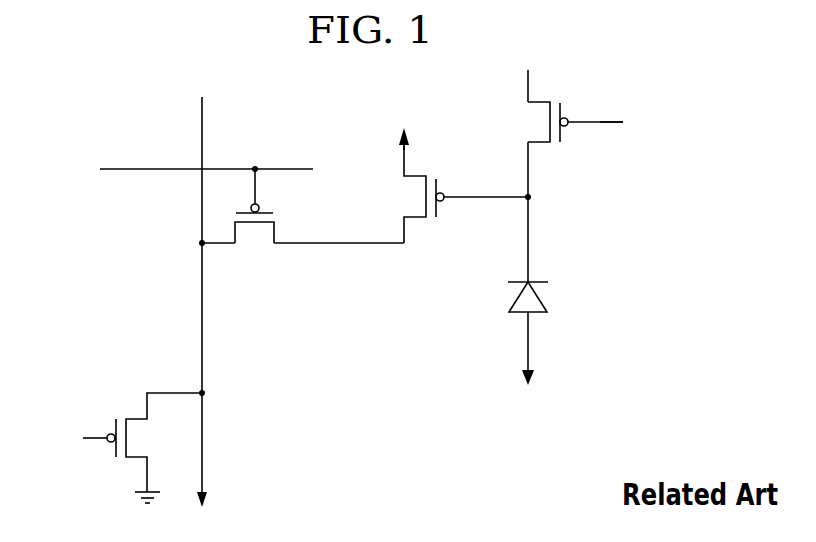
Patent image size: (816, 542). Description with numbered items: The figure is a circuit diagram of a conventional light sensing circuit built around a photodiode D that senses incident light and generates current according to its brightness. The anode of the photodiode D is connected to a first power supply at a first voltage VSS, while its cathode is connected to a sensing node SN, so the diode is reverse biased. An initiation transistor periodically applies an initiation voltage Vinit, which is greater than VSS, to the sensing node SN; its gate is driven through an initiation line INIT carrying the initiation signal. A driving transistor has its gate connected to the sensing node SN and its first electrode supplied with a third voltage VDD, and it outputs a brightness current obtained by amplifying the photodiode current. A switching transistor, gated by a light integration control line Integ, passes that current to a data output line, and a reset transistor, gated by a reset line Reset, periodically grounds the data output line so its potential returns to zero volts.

The photodiode D is at (538, 326).
The sensing node SN is at (543, 234).
The light integration control line Integ is at (177, 166).
The reset line Reset is at (67, 438).
The third voltage VDD is at (405, 126).
The initiation voltage Vinit is at (527, 73).
The initiation line INIT is at (632, 122).
The first voltage VSS is at (528, 390).